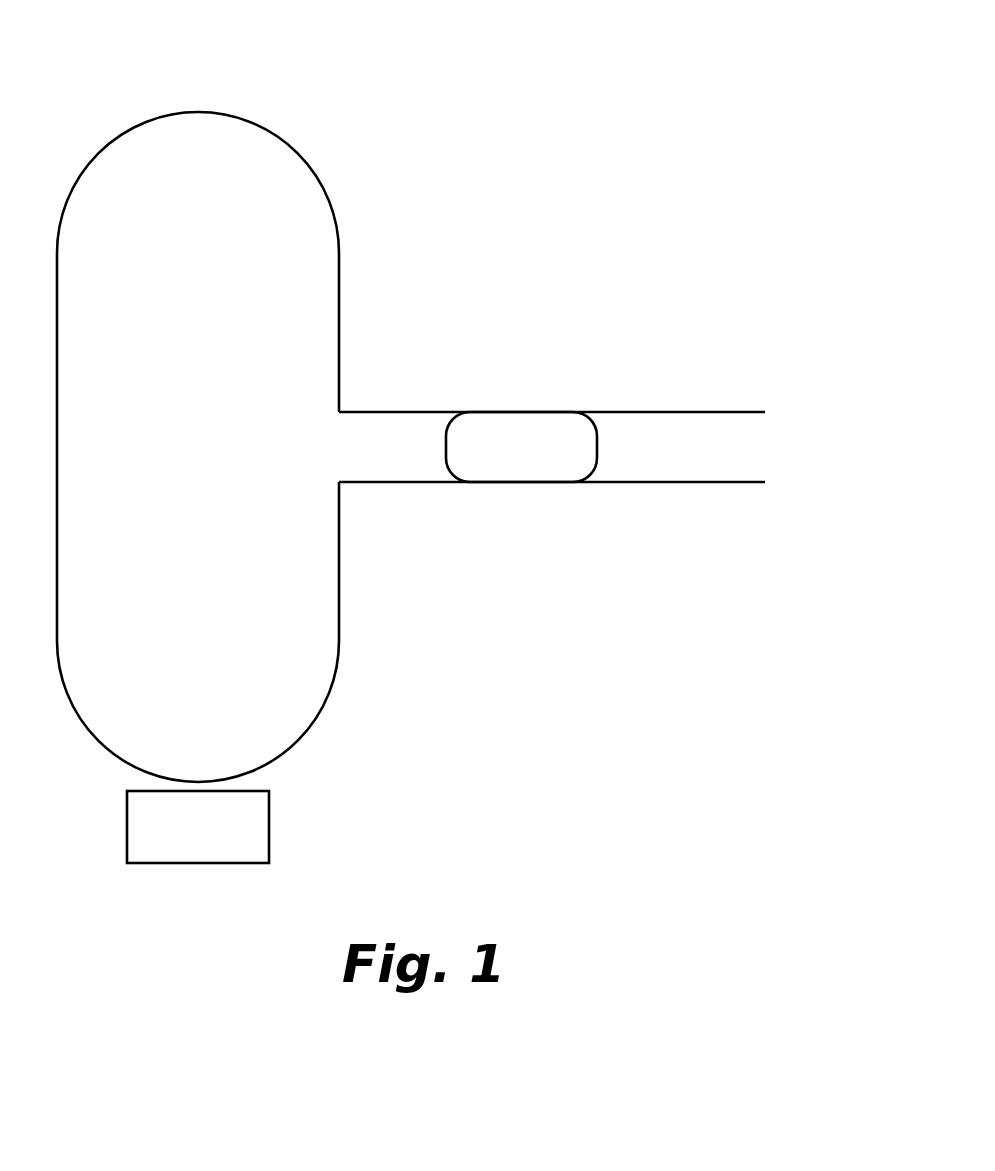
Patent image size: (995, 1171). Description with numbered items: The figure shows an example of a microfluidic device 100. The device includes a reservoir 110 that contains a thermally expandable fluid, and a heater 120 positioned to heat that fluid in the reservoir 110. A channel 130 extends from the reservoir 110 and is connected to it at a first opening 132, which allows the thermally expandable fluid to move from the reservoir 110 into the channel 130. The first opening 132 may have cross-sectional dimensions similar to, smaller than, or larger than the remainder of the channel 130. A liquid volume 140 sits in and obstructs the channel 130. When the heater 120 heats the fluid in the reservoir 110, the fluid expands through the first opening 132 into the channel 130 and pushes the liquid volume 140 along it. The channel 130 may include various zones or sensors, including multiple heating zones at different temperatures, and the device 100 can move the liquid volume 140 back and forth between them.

The microfluidic device 100 is at (221, 78).
The reservoir 110 is at (223, 316).
The heater 120 is at (223, 856).
The channel 130 is at (718, 476).
The first opening 132 is at (348, 461).
The liquid volume 140 is at (517, 430).